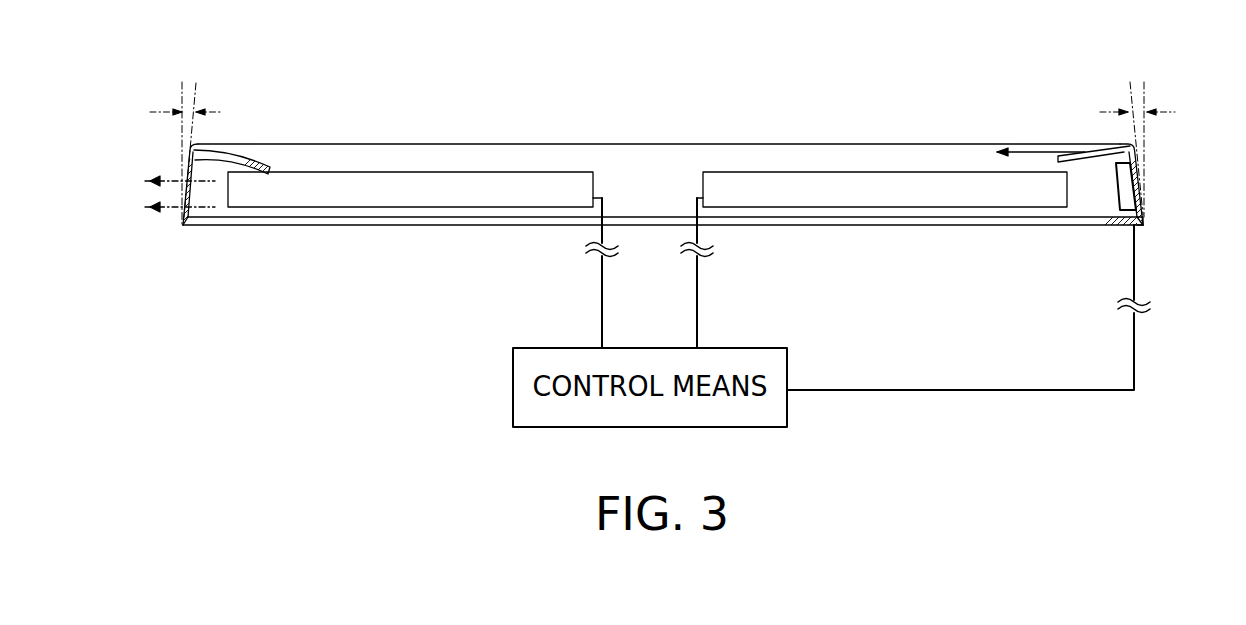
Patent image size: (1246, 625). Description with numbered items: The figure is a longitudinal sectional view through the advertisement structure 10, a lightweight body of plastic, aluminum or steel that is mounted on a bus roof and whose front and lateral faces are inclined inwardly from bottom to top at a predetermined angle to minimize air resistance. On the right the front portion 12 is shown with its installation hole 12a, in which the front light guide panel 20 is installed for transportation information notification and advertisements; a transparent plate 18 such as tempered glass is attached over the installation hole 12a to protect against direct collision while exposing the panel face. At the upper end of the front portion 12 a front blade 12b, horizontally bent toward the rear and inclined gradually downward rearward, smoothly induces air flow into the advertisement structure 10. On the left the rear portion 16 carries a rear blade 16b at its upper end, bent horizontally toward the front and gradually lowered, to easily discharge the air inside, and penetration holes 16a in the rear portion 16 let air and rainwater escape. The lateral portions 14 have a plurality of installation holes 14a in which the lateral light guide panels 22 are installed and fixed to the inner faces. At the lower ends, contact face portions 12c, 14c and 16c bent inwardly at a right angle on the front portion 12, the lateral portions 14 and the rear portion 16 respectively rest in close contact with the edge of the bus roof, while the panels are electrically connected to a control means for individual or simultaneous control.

The advertisement structure 10 is at (232, 124).
The front portion 12 is at (1148, 152).
The installation hole 12a is at (1147, 217).
The front blade 12b is at (1107, 143).
The contact face portion 12c is at (1098, 226).
The lateral portions 14 is at (650, 175).
The installation holes 14a is at (593, 188).
The contact face portion 14c is at (660, 215).
The rear portion 16 is at (183, 167).
The penetration holes 16a is at (187, 205).
The rear blade 16b is at (255, 152).
The contact face portion 16c is at (212, 227).
The transparent plate 18 is at (1147, 183).
The front light guide panel 20 is at (1123, 200).
The lateral light guide panels 22 is at (437, 182).